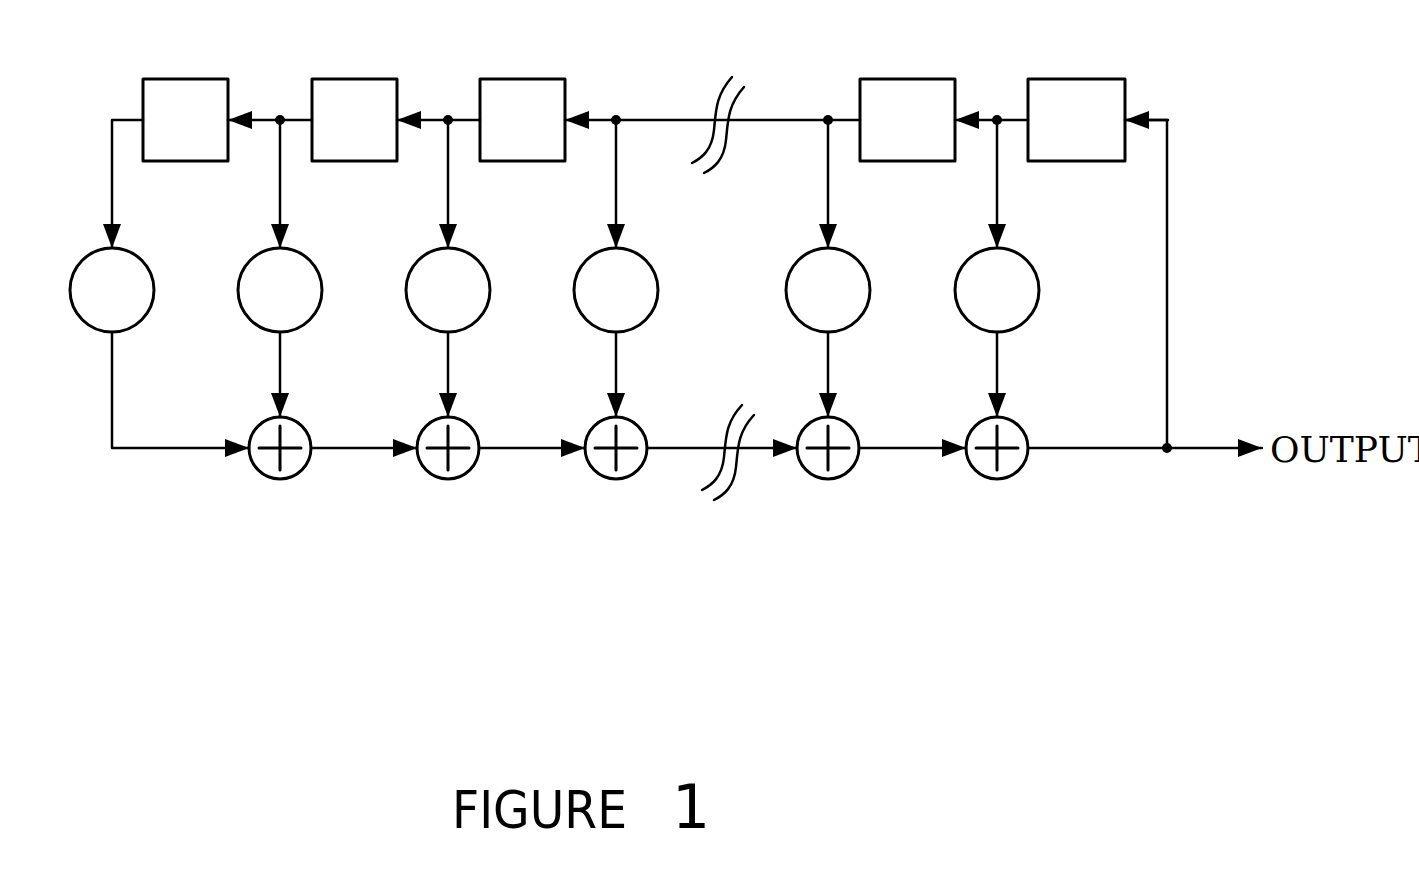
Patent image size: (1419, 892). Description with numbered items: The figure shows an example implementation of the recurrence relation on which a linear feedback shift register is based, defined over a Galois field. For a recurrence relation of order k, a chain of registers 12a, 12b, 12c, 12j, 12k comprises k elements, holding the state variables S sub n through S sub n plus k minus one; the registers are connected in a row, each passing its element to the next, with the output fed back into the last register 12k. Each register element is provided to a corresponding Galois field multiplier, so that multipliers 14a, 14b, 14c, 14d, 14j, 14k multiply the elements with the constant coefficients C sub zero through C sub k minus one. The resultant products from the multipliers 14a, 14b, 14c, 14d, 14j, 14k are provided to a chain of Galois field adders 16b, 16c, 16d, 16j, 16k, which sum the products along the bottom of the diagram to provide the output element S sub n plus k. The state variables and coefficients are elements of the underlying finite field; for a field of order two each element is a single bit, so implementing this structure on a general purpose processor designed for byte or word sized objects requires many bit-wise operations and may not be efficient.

The register 12a is at (160, 80).
The register 12b is at (329, 80).
The register 12c is at (497, 80).
The register 12j is at (877, 80).
The register 12k is at (1045, 80).
The Galois field multiplier 14a is at (142, 260).
The Galois field multiplier 14b is at (310, 260).
The Galois field multiplier 14c is at (478, 260).
The Galois field multiplier 14d is at (646, 260).
The Galois field multiplier 14j is at (858, 260).
The Galois field multiplier 14k is at (1027, 260).
The Galois field adder 16b is at (302, 426).
The Galois field adder 16c is at (470, 426).
The Galois field adder 16d is at (638, 426).
The Galois field adder 16j is at (850, 426).
The Galois field adder 16k is at (1019, 426).